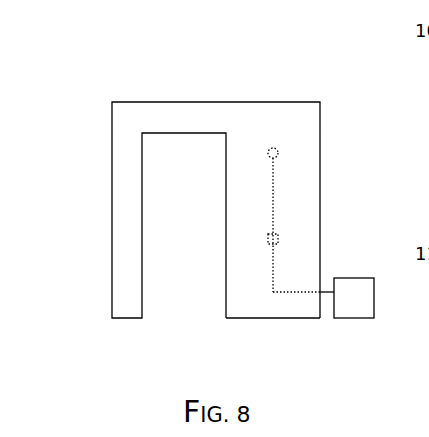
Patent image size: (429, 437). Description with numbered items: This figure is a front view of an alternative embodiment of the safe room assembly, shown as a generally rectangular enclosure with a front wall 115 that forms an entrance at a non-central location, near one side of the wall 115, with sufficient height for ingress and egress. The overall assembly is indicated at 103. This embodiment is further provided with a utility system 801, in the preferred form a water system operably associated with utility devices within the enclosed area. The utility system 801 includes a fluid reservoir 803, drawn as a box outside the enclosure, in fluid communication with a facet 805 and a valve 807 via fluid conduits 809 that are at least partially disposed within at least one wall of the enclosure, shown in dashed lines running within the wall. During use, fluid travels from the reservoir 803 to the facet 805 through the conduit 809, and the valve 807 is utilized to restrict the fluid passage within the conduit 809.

The structure 103 is at (82, 66).
The front wall 115 is at (266, 316).
The utility system 801 is at (240, 252).
The facet 805 is at (278, 151).
The fluid conduits 809 is at (273, 203).
The valve 807 is at (279, 239).
The fluid reservoir 803 is at (352, 318).